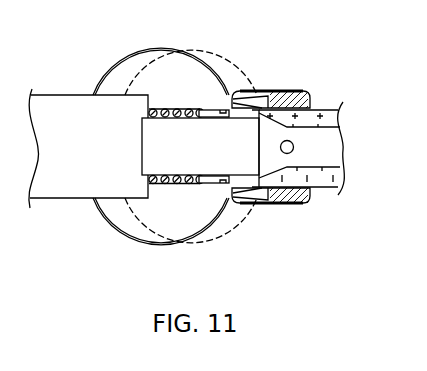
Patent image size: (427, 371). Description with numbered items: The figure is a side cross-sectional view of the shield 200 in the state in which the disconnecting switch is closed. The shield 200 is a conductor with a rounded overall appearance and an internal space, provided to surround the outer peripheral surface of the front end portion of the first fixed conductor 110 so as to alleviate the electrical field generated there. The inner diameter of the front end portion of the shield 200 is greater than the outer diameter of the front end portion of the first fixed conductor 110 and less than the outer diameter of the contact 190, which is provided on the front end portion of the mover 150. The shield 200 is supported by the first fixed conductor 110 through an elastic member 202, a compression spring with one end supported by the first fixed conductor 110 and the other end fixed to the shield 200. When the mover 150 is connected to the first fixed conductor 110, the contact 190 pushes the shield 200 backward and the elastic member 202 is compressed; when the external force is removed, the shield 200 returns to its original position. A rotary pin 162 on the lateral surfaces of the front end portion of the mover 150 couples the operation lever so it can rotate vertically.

The first fixed conductor 110 is at (196, 157).
The mover 150 is at (325, 110).
The rotary pin 162 is at (286, 154).
The contact 190 is at (283, 91).
The shield 200 is at (135, 56).
The elastic member 202 is at (176, 109).